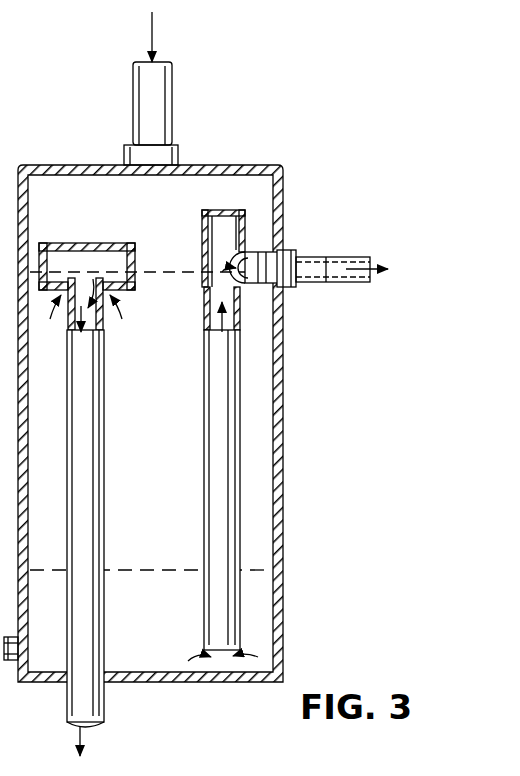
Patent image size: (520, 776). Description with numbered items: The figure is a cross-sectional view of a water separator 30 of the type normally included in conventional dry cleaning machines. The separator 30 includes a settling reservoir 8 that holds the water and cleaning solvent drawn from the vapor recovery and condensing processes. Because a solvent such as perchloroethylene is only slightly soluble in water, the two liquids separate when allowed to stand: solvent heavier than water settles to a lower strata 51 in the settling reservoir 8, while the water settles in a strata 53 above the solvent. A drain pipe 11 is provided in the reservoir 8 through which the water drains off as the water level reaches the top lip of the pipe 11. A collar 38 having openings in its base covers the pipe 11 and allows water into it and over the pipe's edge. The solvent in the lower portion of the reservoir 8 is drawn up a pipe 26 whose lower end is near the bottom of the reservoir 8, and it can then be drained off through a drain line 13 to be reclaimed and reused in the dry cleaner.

The water separator 30 is at (241, 152).
The settling reservoir 8 is at (283, 192).
The collar 38 is at (55, 243).
The water strata 53 is at (165, 272).
The drain pipe 11 is at (105, 318).
The solvent pipe 26 is at (204, 463).
The solvent strata 51 is at (168, 570).
The drain line 13 is at (344, 262).